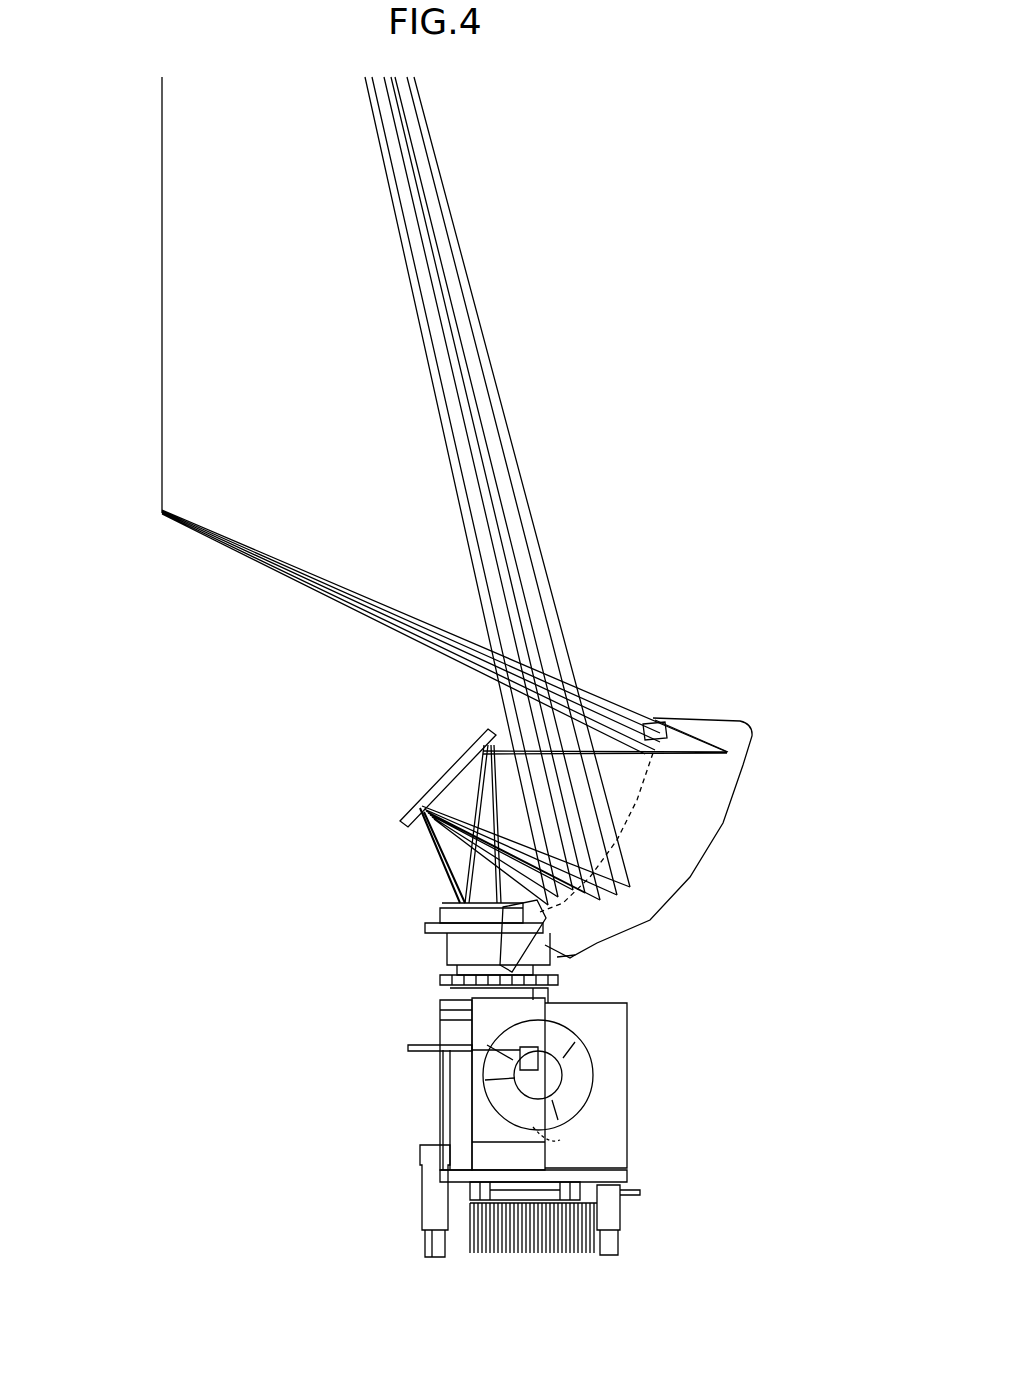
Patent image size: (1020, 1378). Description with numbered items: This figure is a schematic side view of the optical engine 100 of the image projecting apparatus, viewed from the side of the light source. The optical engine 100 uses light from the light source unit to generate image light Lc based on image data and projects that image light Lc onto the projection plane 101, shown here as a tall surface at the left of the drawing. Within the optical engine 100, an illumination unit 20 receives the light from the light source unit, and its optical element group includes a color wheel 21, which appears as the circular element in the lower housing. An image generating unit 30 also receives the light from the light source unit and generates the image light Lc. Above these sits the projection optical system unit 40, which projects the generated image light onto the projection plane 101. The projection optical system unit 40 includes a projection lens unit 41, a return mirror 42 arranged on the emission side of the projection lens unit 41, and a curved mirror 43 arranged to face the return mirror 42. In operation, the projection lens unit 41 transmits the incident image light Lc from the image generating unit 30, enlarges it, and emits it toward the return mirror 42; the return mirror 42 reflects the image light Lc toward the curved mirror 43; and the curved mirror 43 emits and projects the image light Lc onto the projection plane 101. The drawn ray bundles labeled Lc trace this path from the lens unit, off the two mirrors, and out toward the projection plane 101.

The optical engine 100 is at (501, 995).
The projection plane 101 is at (162, 357).
The illumination unit 20 is at (503, 1122).
The color wheel 21 is at (573, 1086).
The image generating unit 30 is at (443, 1245).
The projection optical system unit 40 is at (532, 843).
The projection lens unit 41 is at (460, 950).
The return mirror 42 is at (443, 768).
The curved mirror 43 is at (687, 822).
The image light Lc is at (352, 589).